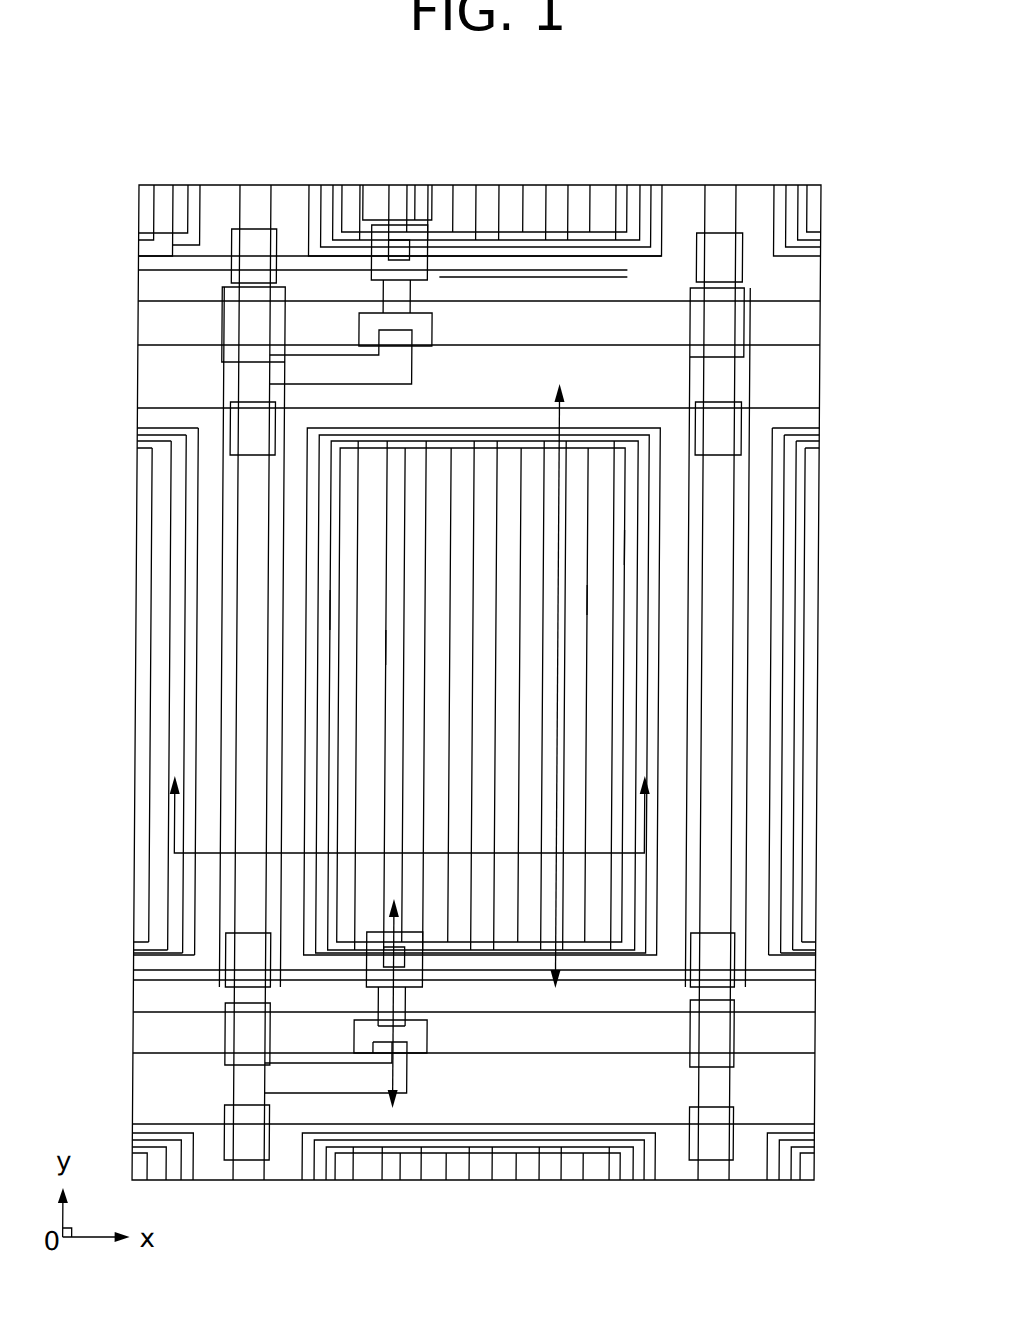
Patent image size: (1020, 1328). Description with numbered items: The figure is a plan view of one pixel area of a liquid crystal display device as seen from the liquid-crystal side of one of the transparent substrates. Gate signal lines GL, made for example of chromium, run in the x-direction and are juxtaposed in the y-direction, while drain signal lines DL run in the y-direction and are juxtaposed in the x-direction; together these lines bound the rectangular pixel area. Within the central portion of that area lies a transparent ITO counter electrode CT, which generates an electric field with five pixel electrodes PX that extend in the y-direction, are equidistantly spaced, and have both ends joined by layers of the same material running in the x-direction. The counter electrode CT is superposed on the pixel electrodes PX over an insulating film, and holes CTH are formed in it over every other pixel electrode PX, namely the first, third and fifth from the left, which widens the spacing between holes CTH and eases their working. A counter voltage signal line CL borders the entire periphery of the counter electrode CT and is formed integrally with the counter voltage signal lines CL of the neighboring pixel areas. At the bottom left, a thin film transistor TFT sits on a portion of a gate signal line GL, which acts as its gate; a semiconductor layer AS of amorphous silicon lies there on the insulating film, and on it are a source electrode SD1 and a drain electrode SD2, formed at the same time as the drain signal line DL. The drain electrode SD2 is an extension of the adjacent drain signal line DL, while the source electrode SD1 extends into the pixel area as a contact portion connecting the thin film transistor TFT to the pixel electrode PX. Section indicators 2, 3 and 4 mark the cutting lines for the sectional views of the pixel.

The counter voltage signal line CL is at (214, 456).
The gate signal line GL is at (783, 327).
The drain signal line DL is at (253, 908).
The counter electrode CT is at (329, 431).
The pixel electrode PX is at (442, 473).
The hole CTH is at (391, 648).
The thin film transistor TFT is at (442, 1037).
The source electrode SD1 is at (374, 960).
The drain electrode SD2 is at (327, 1078).
The semiconductor layer AS is at (229, 1117).
The section line II-II 2 is at (411, 798).
The section line III-III 3 is at (407, 995).
The section line IV-IV 4 is at (563, 683).